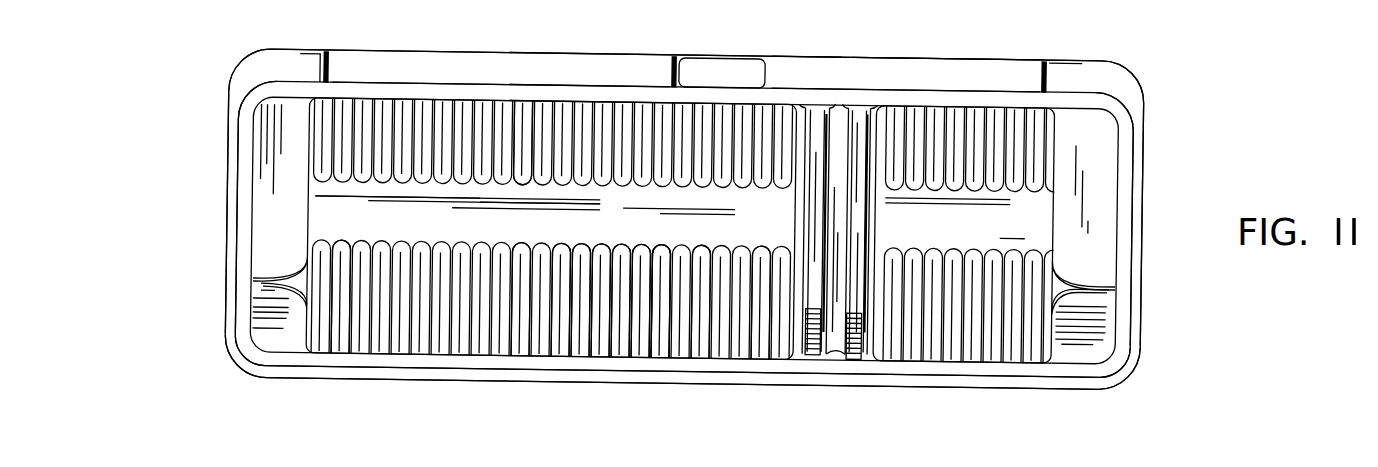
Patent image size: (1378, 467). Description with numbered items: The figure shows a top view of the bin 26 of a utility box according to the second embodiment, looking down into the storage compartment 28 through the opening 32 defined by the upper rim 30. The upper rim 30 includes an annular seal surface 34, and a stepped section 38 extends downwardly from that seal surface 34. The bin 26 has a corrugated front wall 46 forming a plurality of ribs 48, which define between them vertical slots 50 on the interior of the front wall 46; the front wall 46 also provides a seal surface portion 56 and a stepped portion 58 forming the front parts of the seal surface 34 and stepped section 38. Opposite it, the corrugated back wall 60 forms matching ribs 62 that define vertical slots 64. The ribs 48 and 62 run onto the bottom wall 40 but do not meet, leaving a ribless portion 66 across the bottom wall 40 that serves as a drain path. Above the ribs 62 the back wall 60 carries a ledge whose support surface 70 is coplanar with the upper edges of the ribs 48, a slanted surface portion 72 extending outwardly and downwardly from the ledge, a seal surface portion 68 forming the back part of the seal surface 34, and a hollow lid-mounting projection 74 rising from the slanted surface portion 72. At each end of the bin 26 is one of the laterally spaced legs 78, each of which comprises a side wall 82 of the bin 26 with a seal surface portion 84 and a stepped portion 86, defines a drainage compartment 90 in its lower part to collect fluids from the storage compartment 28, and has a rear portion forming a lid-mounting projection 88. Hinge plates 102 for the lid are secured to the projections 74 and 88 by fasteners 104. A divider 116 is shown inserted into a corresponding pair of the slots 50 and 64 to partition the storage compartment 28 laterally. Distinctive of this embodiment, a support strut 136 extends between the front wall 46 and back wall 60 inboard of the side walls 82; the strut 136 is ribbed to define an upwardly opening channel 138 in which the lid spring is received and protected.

The bin 26 is at (1143, 158).
The storage compartment 28 is at (348, 225).
The upper rim 30 is at (1018, 372).
The opening 32 is at (523, 355).
The seal surface 34 is at (658, 375).
The stepped section 38 is at (407, 377).
The bottom wall 40 is at (335, 347).
The front wall 46 is at (606, 393).
The ribs 48 is at (605, 250).
The vertical slots 50 is at (670, 252).
The seal surface portion 56 is at (757, 380).
The stepped portion 58 is at (706, 380).
The back wall 60 is at (518, 52).
The ribs 62 is at (470, 185).
The vertical slots 64 is at (535, 184).
The ribless portion 66 is at (455, 108).
The seal surface portion 68 is at (928, 97).
The support surface 70 is at (517, 107).
The slanted surface portion 72 is at (798, 62).
The lid-mounting projection 74 is at (717, 60).
The legs 78 is at (228, 302).
The side wall 82 is at (228, 118).
The seal surface portion 84 is at (245, 350).
The stepped portion 86 is at (228, 260).
The lid-mounting projections 88 is at (280, 52).
The drainage compartment 90 is at (302, 195).
The hinge plates 102 is at (328, 54).
The fasteners 104 is at (333, 68).
The dividers 116 is at (892, 217).
The support strut 136 is at (832, 345).
The channel 138 is at (838, 108).